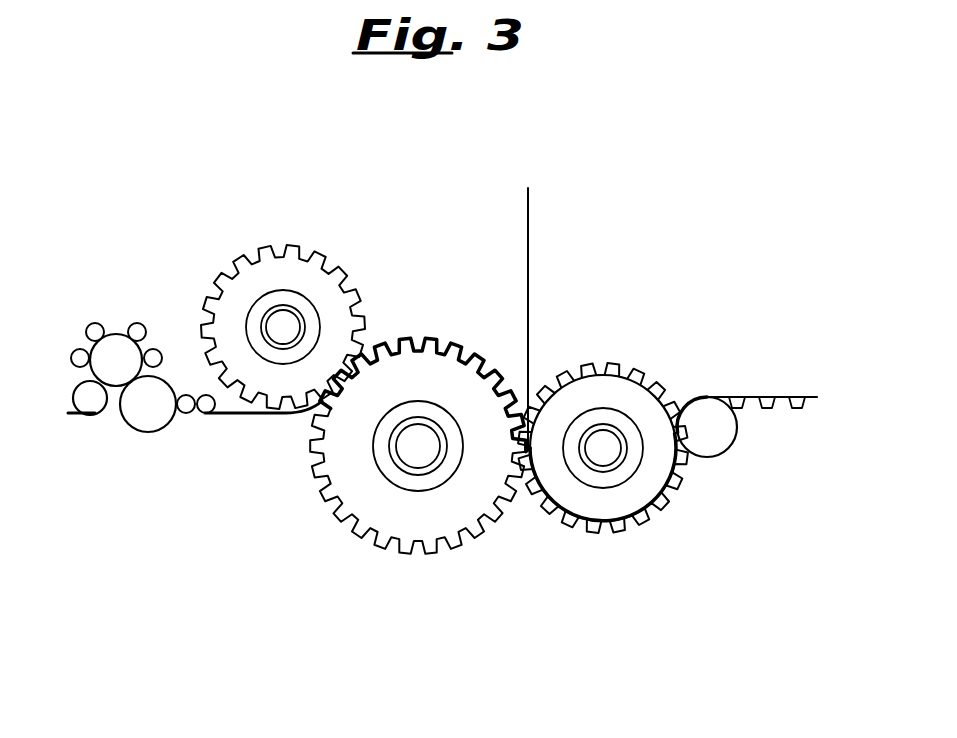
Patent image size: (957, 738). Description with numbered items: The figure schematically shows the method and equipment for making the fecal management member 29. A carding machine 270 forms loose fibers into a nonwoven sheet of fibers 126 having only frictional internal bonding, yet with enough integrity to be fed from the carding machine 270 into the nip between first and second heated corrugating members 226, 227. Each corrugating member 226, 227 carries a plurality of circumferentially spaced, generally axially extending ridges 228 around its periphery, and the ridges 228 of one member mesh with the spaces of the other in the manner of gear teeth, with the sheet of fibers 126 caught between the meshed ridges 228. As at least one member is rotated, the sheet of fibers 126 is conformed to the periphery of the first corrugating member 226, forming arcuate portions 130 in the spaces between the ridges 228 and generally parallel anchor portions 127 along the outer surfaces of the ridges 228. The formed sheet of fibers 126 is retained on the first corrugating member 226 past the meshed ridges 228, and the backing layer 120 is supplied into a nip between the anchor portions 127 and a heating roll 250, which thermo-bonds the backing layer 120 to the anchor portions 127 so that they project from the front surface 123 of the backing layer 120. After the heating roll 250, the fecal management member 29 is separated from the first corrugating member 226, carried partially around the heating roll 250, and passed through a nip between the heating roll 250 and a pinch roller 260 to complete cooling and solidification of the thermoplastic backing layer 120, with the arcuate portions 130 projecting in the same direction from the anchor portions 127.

The fecal management member 29 is at (775, 390).
The backing layer 120 is at (530, 325).
The front surface 123 is at (522, 241).
The sheet of fibers 126 is at (233, 418).
The anchor portions 127 is at (455, 345).
The arcuate portions 130 is at (493, 373).
The first corrugating member 226 is at (393, 513).
The second corrugating member 227 is at (242, 292).
The ridges 228 is at (363, 342).
The heating roll 250 is at (590, 507).
The pinch roller 260 is at (720, 430).
The carding machine 270 is at (122, 347).